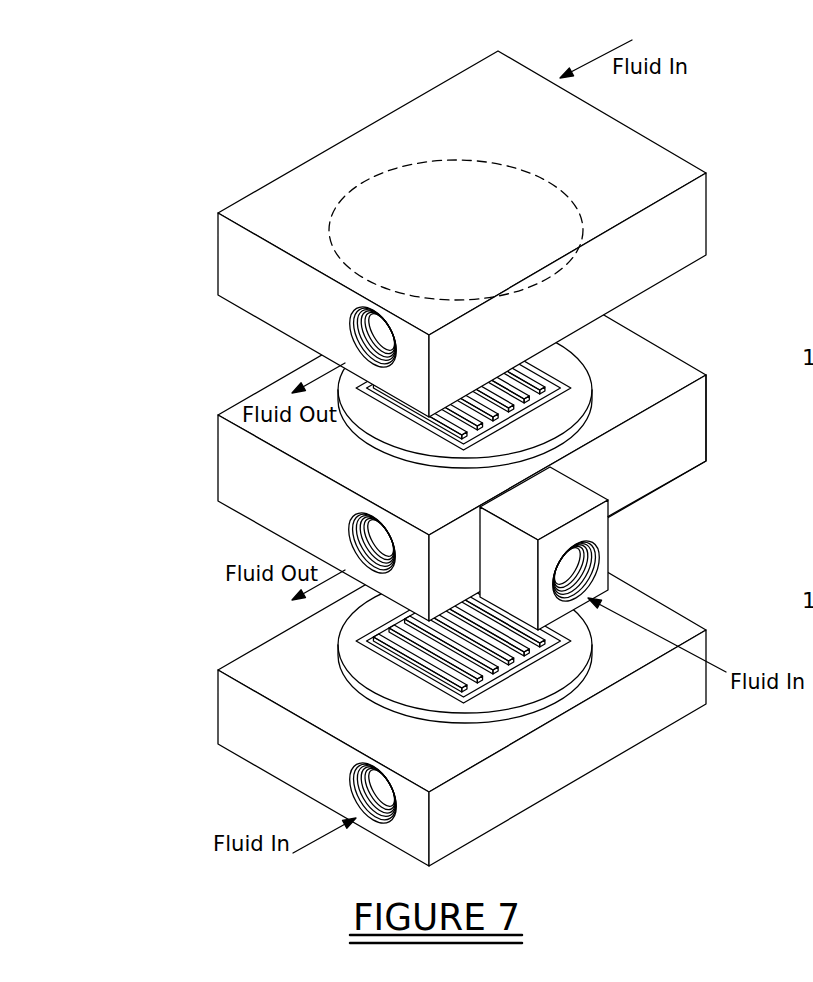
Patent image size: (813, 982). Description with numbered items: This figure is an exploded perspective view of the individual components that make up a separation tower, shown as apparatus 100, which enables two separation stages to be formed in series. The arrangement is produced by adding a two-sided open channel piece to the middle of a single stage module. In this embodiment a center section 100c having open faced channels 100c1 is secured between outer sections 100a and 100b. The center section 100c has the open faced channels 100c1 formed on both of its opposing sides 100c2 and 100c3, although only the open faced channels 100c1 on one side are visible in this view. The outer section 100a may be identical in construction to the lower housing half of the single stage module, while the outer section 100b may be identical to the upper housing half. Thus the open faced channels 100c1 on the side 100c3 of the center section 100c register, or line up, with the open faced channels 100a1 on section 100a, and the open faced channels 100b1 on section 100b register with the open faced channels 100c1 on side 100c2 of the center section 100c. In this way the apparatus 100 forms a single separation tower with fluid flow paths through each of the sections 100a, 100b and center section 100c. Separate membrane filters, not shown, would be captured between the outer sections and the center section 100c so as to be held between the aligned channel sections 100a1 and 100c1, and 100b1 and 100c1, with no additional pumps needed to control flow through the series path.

The apparatus 100 is at (445, 458).
The outer section 100a is at (288, 629).
The open faced channels 100a1 is at (455, 670).
The outer section 100b is at (316, 138).
The open faced channels 100b1 is at (456, 191).
The center section 100c is at (288, 371).
The open faced channels 100c1 is at (553, 387).
The side 100c2 is at (670, 375).
The side 100c3 is at (648, 498).